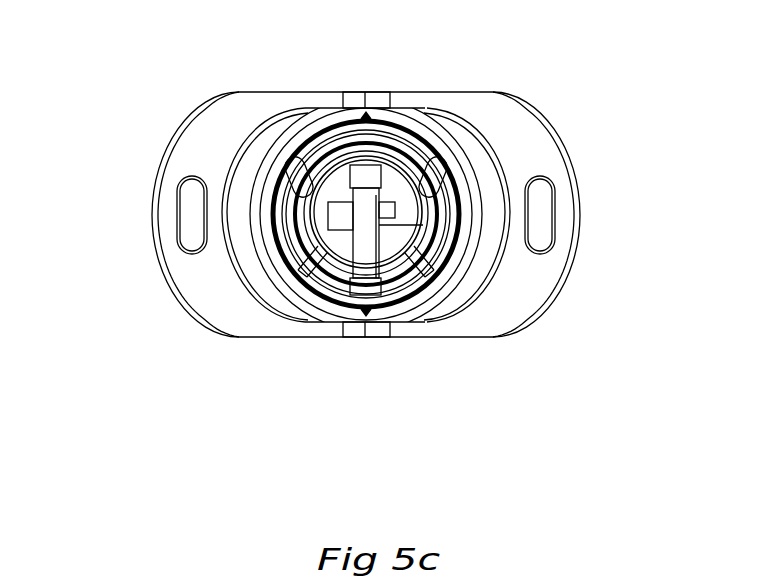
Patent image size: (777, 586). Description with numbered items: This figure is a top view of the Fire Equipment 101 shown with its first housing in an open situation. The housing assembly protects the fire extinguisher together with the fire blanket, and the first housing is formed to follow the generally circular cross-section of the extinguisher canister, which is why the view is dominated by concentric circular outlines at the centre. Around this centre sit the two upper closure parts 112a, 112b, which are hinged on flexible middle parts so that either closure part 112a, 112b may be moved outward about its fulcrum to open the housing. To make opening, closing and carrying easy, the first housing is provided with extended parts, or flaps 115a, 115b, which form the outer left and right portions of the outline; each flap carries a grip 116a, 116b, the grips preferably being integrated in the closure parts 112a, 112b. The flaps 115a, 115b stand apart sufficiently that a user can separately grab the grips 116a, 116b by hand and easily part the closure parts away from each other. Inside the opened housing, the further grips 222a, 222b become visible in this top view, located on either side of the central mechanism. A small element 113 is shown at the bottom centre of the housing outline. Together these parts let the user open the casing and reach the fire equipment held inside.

The rotary drive mechanism 101 is at (336, 184).
The closure part 112a is at (233, 178).
The closure part 112b is at (497, 173).
The bottom tab 113 is at (365, 337).
The extended part (flap) 115a is at (190, 307).
The extended part (flap) 115b is at (533, 315).
The grip 116a is at (180, 228).
The grip 116b is at (547, 223).
The grip 222a is at (287, 253).
The grip 222b is at (445, 177).